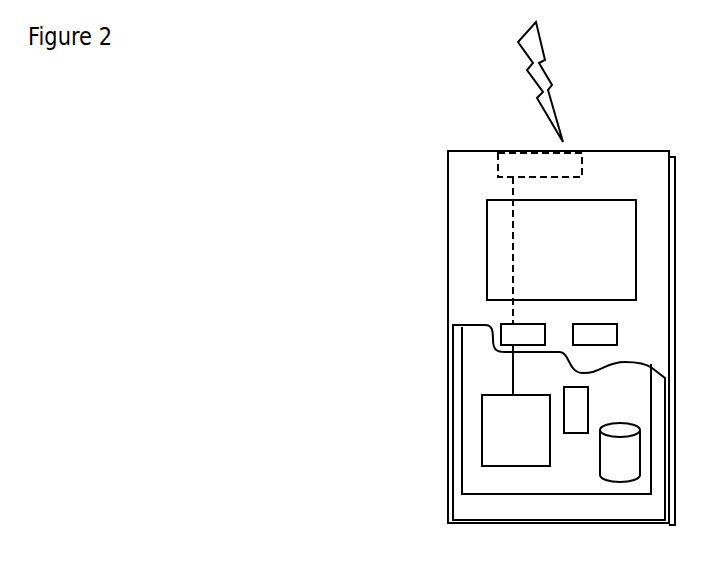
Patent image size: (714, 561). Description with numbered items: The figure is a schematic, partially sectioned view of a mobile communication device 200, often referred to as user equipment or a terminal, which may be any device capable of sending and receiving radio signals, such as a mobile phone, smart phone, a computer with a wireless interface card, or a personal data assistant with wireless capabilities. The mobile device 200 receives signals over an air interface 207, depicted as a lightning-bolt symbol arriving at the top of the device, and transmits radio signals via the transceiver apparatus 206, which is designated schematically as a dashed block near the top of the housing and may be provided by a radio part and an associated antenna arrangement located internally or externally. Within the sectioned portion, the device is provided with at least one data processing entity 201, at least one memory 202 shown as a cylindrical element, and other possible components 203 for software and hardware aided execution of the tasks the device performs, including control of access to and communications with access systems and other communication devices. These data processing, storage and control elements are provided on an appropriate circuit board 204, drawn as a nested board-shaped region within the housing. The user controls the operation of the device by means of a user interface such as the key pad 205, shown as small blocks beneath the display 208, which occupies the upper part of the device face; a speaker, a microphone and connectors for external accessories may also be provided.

The communication device 200 is at (448, 180).
The data processing entity 201 is at (487, 418).
The memory 202 is at (617, 460).
The other possible components 203 is at (576, 398).
The circuit board 204 is at (482, 480).
The key pad 205 is at (503, 335).
The transceiver apparatus 206 is at (573, 161).
The air interface 207 is at (563, 99).
The display 208 is at (497, 239).